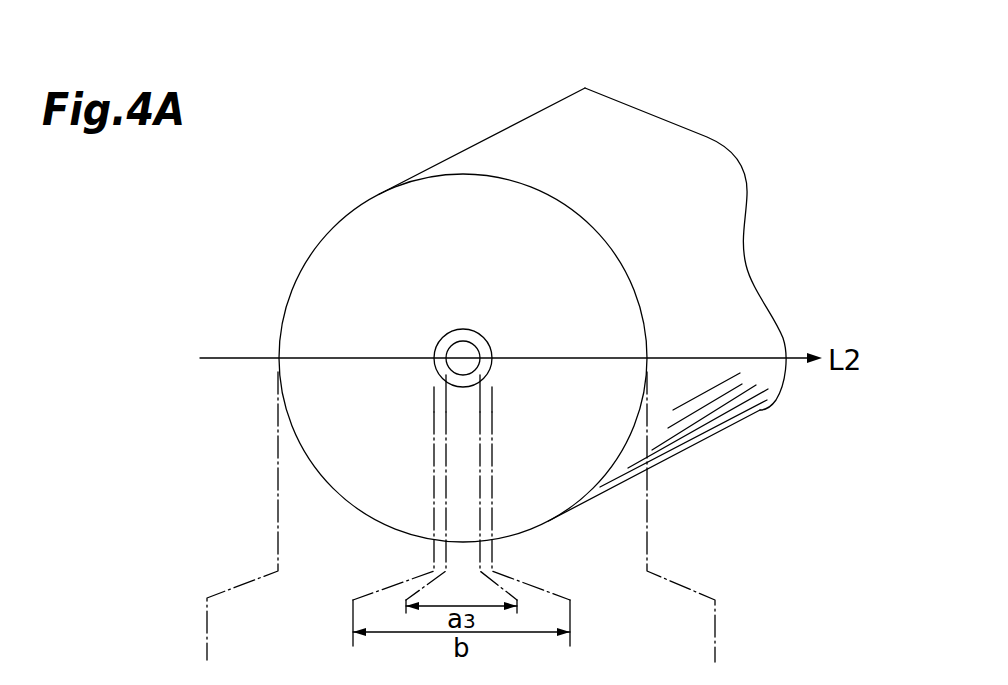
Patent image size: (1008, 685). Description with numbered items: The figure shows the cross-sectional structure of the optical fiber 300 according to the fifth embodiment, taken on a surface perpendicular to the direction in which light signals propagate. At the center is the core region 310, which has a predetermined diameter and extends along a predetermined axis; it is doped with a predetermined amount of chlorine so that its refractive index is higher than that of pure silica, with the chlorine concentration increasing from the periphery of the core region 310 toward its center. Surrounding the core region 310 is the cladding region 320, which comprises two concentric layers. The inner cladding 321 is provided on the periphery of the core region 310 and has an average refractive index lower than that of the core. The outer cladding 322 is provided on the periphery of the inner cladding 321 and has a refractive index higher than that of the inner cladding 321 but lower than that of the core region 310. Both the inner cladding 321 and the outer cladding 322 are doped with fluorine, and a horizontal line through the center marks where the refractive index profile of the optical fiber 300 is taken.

The optical fiber 300 is at (689, 171).
The core region 310 is at (463, 347).
The cladding region 320 is at (388, 358).
The inner cladding 321 is at (447, 347).
The outer cladding 322 is at (300, 341).